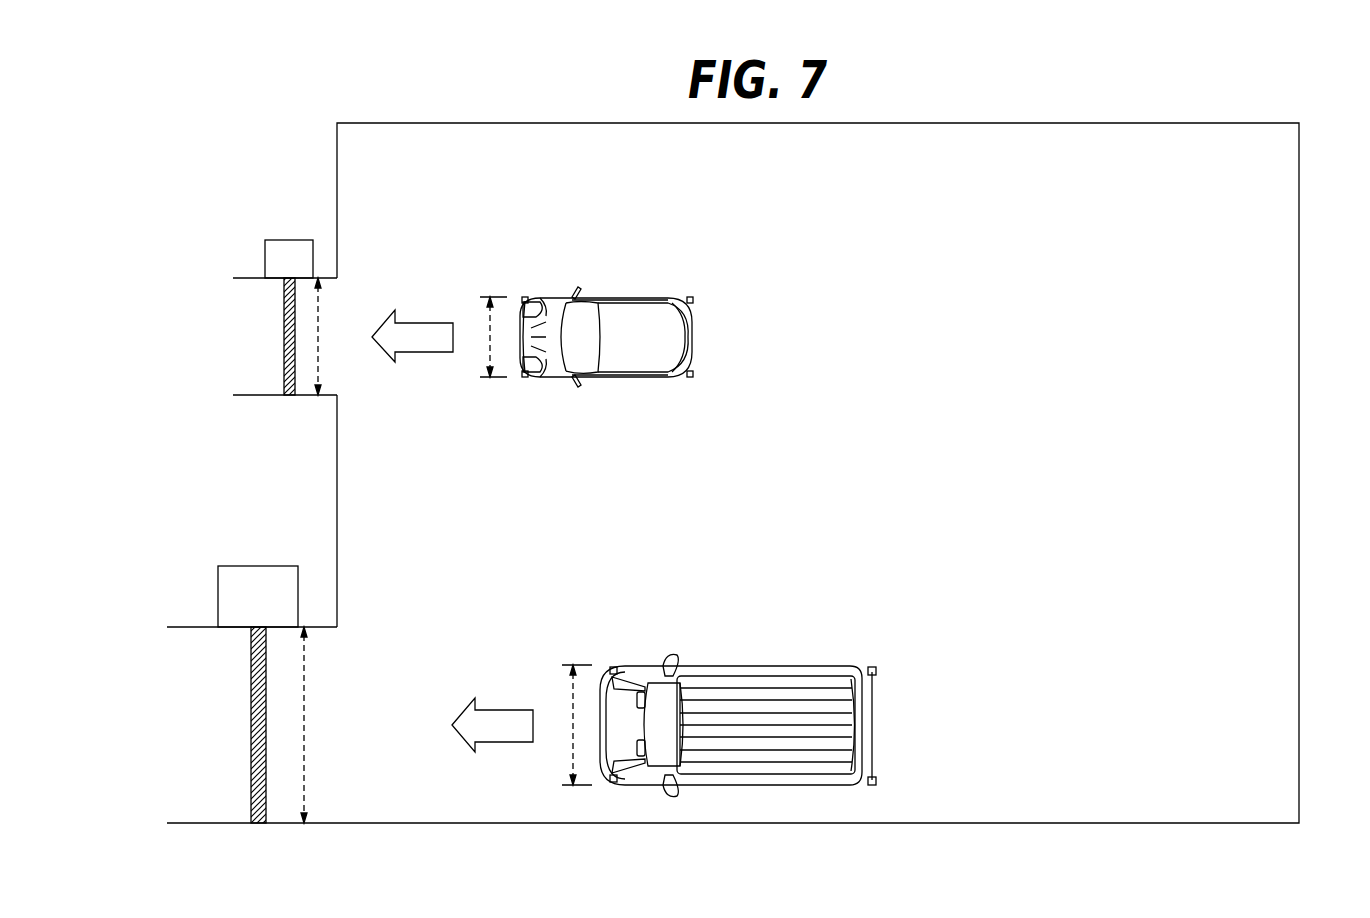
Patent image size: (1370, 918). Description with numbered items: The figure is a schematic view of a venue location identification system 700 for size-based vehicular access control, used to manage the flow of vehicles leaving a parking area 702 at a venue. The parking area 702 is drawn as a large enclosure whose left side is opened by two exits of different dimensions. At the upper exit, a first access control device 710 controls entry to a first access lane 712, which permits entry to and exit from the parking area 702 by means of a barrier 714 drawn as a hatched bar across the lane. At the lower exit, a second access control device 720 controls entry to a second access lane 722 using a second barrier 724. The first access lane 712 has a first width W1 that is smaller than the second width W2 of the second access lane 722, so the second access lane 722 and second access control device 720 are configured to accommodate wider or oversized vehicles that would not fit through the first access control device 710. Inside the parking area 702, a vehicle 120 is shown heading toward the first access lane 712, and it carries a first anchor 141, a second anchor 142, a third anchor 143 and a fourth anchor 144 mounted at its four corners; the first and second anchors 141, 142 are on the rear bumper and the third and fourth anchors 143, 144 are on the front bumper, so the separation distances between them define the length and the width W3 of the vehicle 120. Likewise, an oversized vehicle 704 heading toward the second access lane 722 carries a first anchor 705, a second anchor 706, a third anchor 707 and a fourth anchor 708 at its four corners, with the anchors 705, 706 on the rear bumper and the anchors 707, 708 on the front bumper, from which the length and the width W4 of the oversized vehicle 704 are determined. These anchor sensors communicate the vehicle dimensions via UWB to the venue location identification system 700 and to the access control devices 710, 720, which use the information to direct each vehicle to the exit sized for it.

The venue location identification system 700 is at (1230, 95).
The parking area 702 is at (1267, 257).
The first access control device 710 is at (288, 240).
The first access lane 712 is at (261, 354).
The barrier 714 is at (284, 297).
The second access control device 720 is at (255, 566).
The second access lane 722 is at (228, 742).
The barrier 724 is at (251, 680).
The vehicle 120 is at (650, 352).
The first anchor 141 is at (690, 296).
The second anchor 142 is at (690, 378).
The third anchor 143 is at (525, 378).
The fourth anchor 144 is at (525, 296).
The oversized vehicle 704 is at (777, 746).
The first anchor 705 is at (873, 666).
The second anchor 706 is at (873, 786).
The third anchor 707 is at (613, 783).
The fourth anchor 708 is at (613, 666).
The first width W1 is at (318, 310).
The second width W2 is at (304, 723).
The width of vehicle W3 is at (490, 323).
The width of oversized vehicle W4 is at (573, 702).